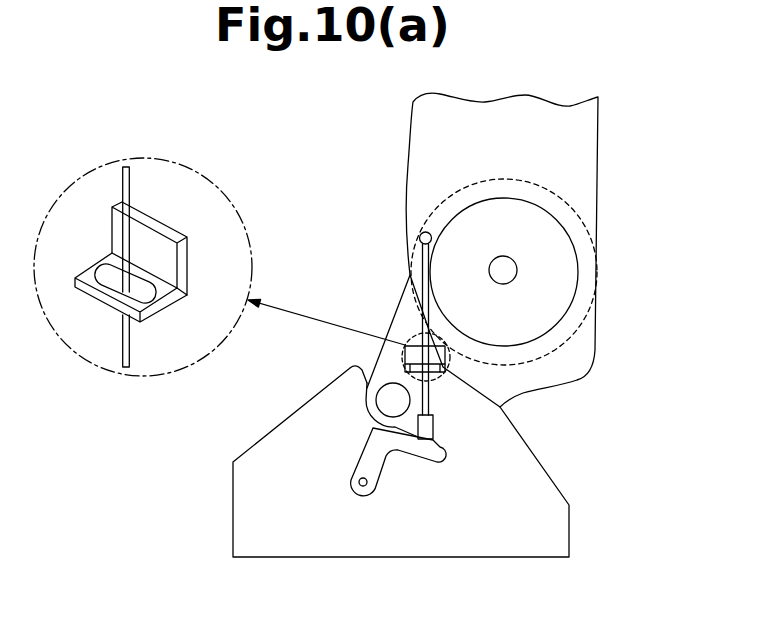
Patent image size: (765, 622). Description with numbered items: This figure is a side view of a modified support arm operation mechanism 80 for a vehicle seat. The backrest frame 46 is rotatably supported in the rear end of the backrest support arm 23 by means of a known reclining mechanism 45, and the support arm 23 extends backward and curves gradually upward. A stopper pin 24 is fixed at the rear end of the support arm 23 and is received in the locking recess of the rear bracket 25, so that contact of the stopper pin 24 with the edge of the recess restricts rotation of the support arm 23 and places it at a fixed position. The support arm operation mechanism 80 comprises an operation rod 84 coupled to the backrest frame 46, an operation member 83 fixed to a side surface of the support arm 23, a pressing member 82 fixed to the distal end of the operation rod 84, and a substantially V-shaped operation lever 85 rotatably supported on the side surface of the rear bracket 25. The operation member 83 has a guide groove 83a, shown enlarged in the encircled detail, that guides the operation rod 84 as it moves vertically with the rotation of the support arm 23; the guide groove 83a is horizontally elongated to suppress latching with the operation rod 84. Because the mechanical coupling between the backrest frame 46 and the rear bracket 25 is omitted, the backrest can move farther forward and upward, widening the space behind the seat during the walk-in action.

The backrest frame 46 is at (407, 143).
The reclining mechanism 45 is at (580, 268).
The backrest support arm 23 is at (408, 300).
The rear bracket 25 is at (548, 468).
The stopper pin 24 is at (387, 363).
The operation lever 85 is at (418, 457).
The pressing member 82 is at (433, 427).
The operation rod 84 is at (430, 295).
The operation member 83 is at (447, 365).
The guide groove 83a is at (410, 343).
The support arm operation mechanism 80 is at (545, 405).